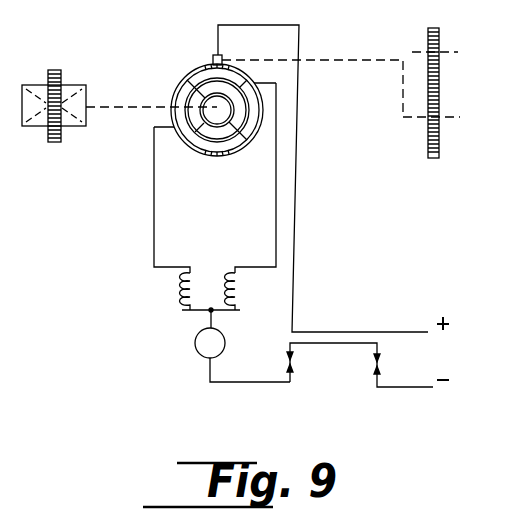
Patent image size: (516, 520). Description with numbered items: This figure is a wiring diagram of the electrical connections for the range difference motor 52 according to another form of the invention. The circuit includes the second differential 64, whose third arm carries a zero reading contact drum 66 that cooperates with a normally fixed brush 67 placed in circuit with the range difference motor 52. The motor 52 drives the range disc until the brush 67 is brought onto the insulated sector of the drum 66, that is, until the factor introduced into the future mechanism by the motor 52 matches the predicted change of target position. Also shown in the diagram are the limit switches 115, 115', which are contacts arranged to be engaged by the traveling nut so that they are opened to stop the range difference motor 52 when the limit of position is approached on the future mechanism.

The second differential 64 is at (56, 70).
The zero reading contact drum 66 is at (217, 126).
The normally fixed brush 67 is at (213, 59).
The range difference motor 52 is at (242, 346).
The limit switch 115 is at (285, 385).
The limit switch 115' is at (378, 386).